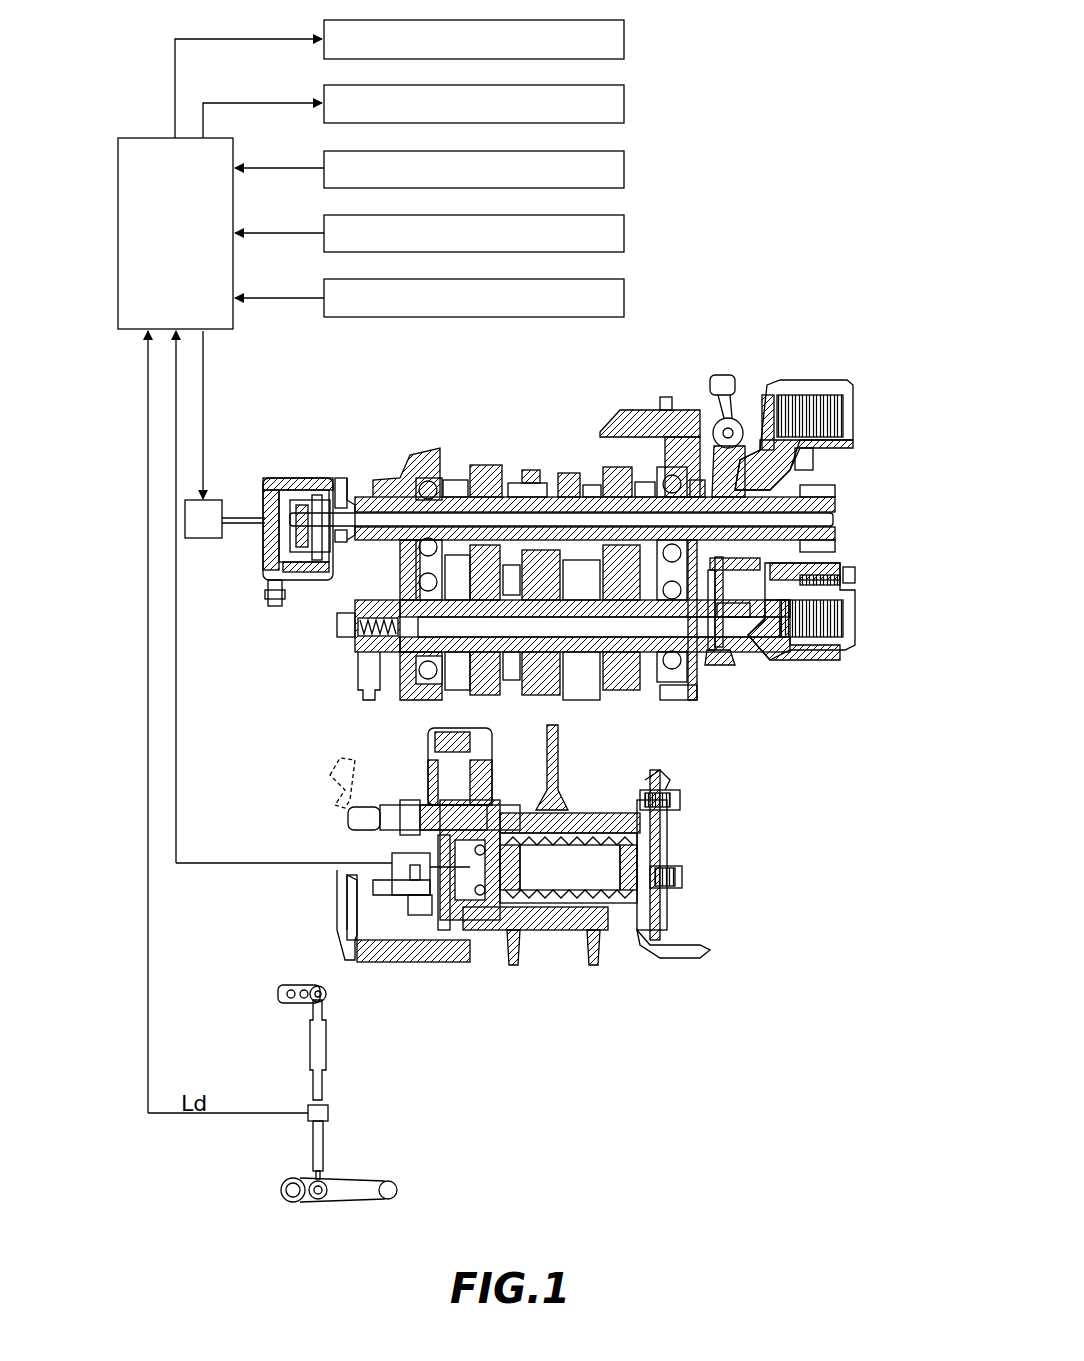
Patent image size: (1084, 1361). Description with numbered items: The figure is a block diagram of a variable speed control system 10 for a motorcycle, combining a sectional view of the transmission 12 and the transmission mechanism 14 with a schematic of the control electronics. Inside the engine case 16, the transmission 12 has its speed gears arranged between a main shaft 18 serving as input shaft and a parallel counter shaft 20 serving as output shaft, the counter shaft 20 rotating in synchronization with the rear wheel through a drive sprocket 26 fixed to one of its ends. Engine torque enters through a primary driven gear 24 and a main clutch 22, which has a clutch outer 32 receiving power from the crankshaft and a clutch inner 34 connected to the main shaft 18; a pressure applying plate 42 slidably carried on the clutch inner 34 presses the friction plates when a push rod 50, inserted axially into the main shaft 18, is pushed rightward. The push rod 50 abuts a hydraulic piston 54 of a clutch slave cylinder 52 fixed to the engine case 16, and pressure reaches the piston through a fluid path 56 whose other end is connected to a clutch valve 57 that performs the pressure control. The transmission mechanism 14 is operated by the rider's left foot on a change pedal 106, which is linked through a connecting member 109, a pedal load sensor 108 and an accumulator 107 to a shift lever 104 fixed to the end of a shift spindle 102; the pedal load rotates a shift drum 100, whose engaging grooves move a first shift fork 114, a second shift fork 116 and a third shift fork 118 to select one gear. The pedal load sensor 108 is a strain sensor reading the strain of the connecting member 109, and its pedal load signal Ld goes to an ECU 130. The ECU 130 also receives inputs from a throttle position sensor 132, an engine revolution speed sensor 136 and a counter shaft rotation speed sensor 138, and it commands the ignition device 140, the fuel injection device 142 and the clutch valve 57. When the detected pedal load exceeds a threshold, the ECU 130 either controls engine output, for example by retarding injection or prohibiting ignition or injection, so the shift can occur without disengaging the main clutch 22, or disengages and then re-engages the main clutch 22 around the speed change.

The variable speed control system 10 is at (826, 168).
The transmission 12 is at (486, 436).
The transmission mechanism 14 is at (710, 925).
The engine case 16 is at (430, 456).
The main shaft 18 is at (645, 492).
The counter shaft 20 is at (422, 645).
The main clutch 22 is at (866, 372).
The primary driven gear 24 is at (720, 385).
The drive sprocket 26 is at (350, 665).
The clutch outer 32 is at (821, 639).
The clutch inner 34 is at (843, 588).
The pressure applying plate 42 is at (760, 628).
The push rod 50 is at (836, 520).
The clutch slave cylinder 52 is at (338, 478).
The hydraulic piston 54 is at (305, 560).
The fluid path 56 is at (287, 536).
The clutch valve 57 is at (205, 540).
The shift drum 100 is at (620, 880).
The shift spindle 102 is at (390, 806).
The shift lever 104 is at (358, 775).
The change pedal 106 is at (365, 1175).
The accumulator 107 is at (325, 1045).
The pedal load sensor 108 is at (328, 1110).
The connecting member 109 is at (312, 1138).
The first shift fork 114 is at (560, 755).
The second shift fork 116 is at (600, 940).
The third shift fork 118 is at (522, 940).
The ECU 130 is at (234, 316).
The throttle position sensor 132 is at (625, 166).
The engine revolution speed sensor 136 is at (625, 231).
The counter shaft rotation speed sensor 138 is at (625, 296).
The ignition device 140 is at (625, 36).
The fuel injection device 142 is at (625, 101).